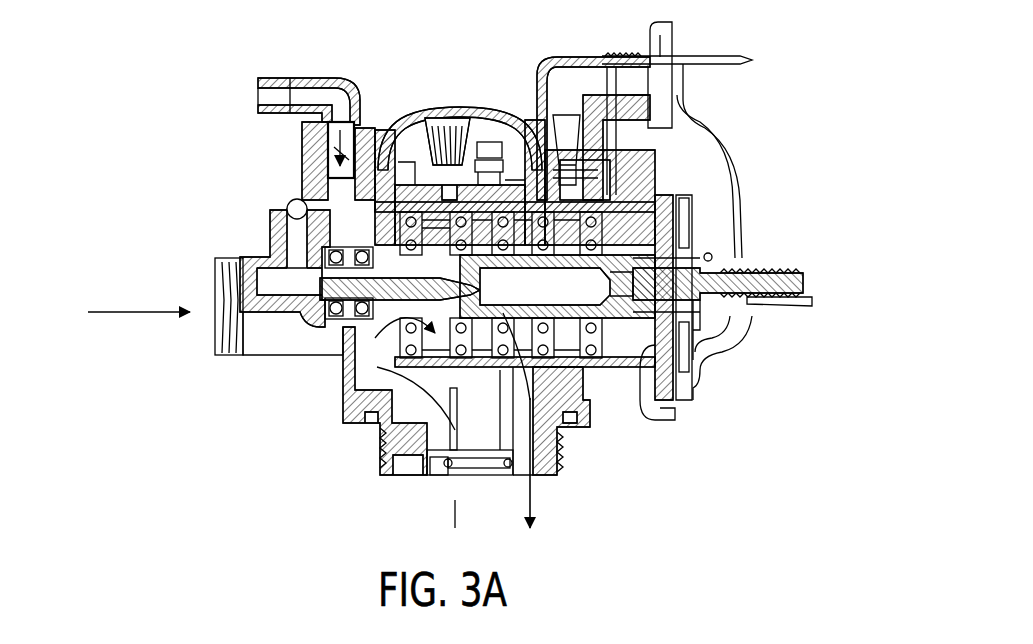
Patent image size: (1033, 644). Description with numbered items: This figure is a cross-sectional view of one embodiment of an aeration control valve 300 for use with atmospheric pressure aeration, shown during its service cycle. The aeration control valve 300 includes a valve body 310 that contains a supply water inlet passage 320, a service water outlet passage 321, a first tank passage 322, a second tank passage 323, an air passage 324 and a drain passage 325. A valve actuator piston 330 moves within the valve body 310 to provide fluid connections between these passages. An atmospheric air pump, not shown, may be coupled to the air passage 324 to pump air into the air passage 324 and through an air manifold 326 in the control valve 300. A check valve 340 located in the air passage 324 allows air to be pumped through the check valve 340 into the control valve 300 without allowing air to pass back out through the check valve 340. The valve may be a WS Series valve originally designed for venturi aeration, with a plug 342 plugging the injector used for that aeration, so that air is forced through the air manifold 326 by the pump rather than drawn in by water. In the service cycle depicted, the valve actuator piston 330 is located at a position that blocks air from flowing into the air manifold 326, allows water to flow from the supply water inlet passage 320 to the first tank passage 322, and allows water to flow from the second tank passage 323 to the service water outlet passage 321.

The aeration control valve 300 is at (147, 171).
The valve body 310 is at (272, 232).
The supply water inlet passage 320 is at (492, 293).
The service water outlet passage 321 is at (430, 300).
The first tank passage 322 is at (535, 472).
The second tank passage 323 is at (455, 477).
The air passage 324 is at (310, 90).
The drain passage 325 is at (575, 80).
The air manifold 326 is at (289, 209).
The valve actuator piston 330 is at (712, 262).
The check valve 340 is at (333, 158).
The plug 342 is at (480, 158).